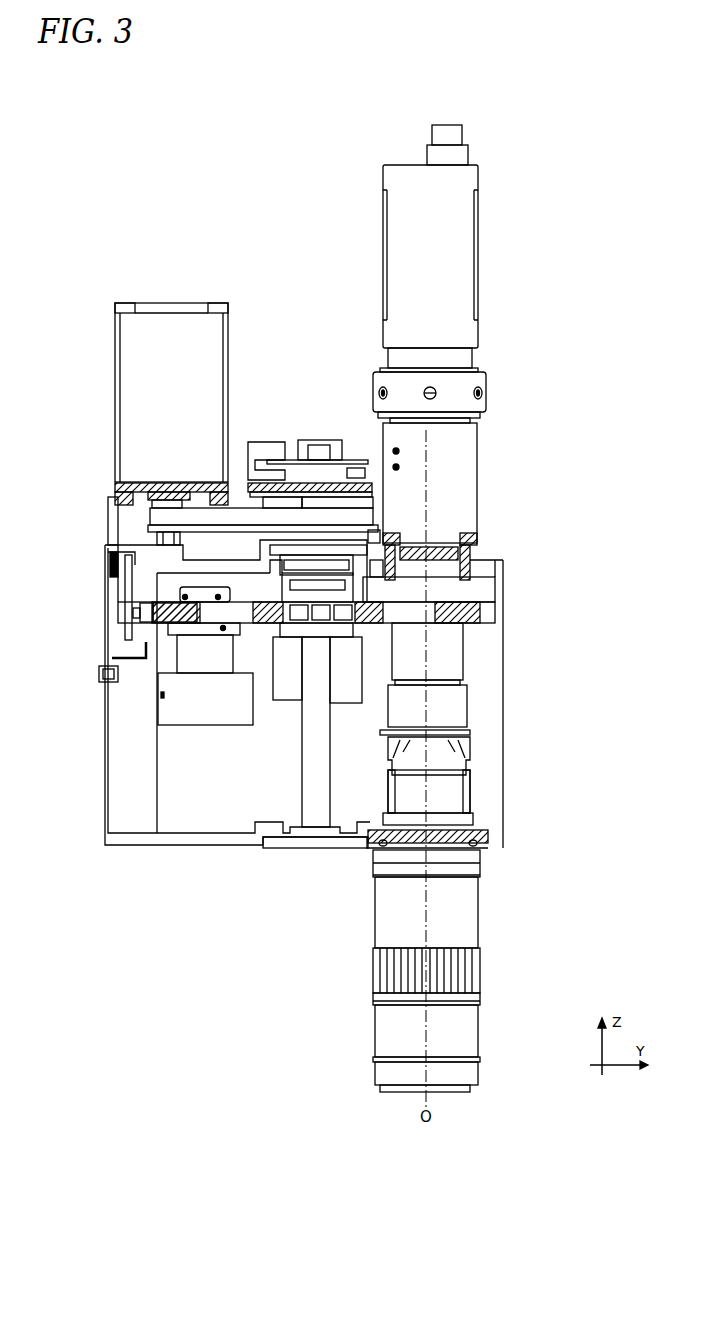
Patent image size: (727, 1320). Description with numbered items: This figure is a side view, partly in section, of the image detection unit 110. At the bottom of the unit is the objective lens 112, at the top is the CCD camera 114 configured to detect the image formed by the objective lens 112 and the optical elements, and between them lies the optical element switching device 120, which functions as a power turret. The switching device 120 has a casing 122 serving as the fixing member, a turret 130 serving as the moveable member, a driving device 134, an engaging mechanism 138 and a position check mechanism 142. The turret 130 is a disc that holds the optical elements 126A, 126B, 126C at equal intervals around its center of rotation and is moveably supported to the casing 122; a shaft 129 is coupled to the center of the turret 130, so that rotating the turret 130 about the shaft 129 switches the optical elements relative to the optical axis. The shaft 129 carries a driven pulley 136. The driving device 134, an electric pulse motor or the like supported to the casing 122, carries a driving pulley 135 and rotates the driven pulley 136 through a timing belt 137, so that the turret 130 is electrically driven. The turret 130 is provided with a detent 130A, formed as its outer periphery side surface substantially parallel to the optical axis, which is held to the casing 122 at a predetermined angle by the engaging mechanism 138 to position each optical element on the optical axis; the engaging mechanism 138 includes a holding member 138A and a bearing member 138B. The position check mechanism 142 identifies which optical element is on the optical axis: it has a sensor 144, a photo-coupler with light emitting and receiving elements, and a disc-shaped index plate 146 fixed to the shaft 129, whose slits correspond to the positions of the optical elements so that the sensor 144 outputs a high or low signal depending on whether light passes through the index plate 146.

The image detection unit 110 is at (252, 211).
The objective lens 112 is at (462, 940).
The CCD camera 114 is at (462, 287).
The optical element switching device 120 is at (300, 356).
The casing 122 is at (125, 528).
The optical element 126A is at (230, 712).
The optical element 126B is at (296, 695).
The optical element 126C is at (450, 704).
The shaft 129 is at (318, 760).
The turret 130 is at (497, 598).
The detent 130A is at (497, 612).
The driving device 134 is at (218, 403).
The driving pulley 135 is at (145, 503).
The driven pulley 136 is at (362, 490).
The timing belt 137 is at (207, 485).
The engaging mechanism 138 is at (99, 588).
The holding member 138A is at (121, 606).
The bearing member 138B is at (127, 616).
The position check mechanism 142 is at (310, 411).
The sensor 144 is at (272, 448).
The index plate 146 is at (360, 462).